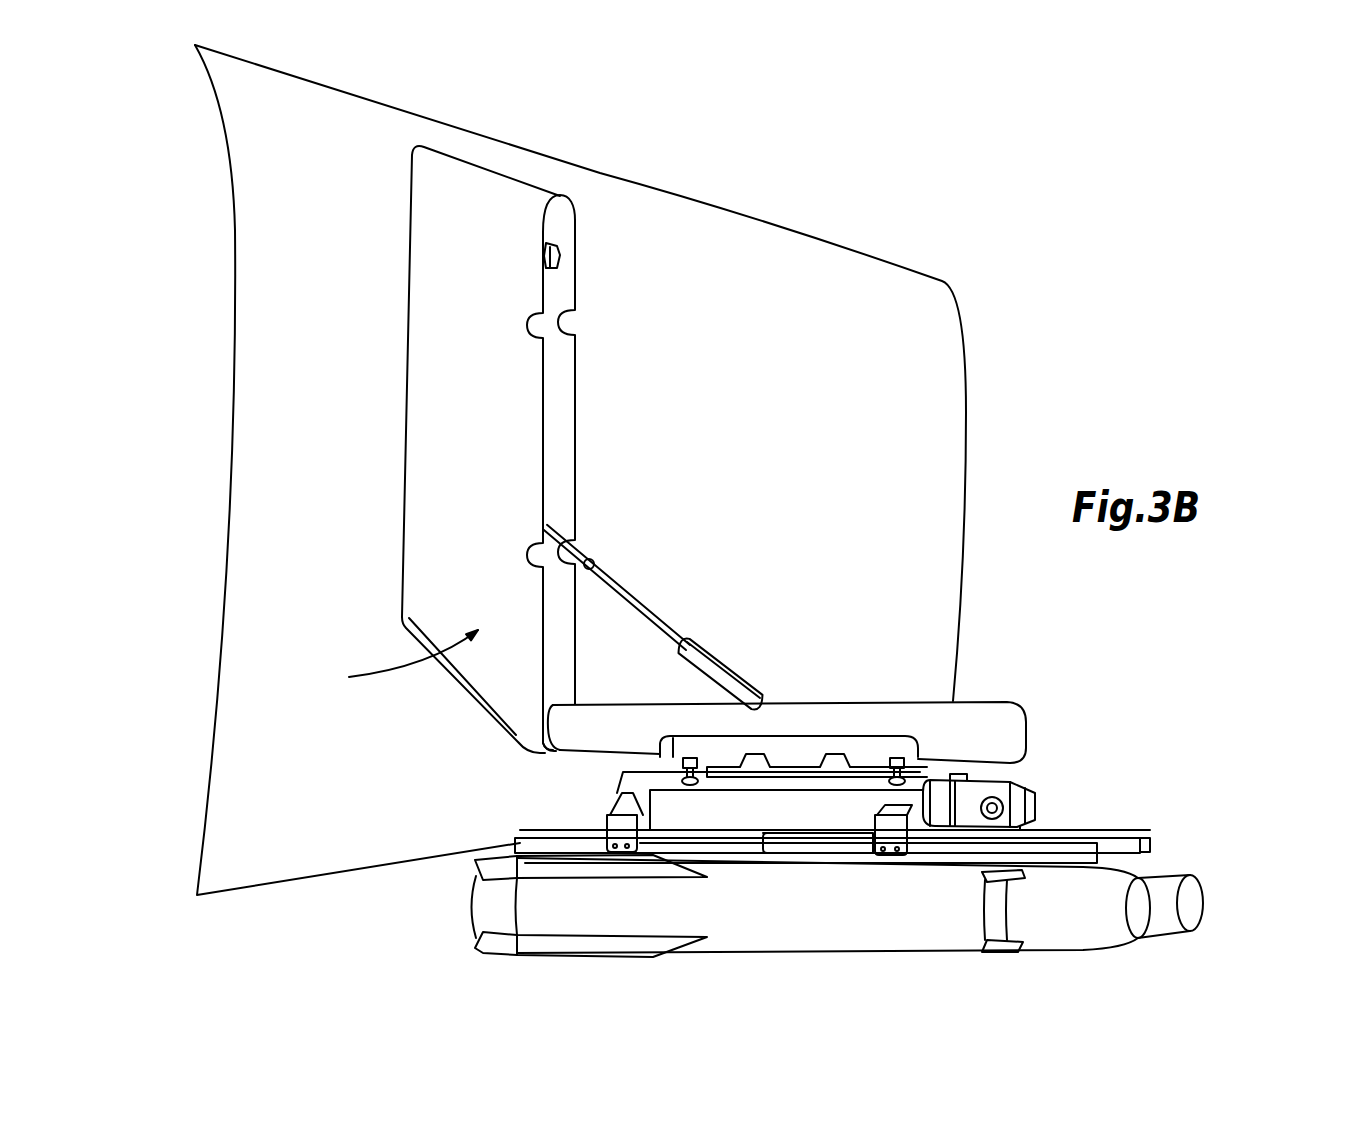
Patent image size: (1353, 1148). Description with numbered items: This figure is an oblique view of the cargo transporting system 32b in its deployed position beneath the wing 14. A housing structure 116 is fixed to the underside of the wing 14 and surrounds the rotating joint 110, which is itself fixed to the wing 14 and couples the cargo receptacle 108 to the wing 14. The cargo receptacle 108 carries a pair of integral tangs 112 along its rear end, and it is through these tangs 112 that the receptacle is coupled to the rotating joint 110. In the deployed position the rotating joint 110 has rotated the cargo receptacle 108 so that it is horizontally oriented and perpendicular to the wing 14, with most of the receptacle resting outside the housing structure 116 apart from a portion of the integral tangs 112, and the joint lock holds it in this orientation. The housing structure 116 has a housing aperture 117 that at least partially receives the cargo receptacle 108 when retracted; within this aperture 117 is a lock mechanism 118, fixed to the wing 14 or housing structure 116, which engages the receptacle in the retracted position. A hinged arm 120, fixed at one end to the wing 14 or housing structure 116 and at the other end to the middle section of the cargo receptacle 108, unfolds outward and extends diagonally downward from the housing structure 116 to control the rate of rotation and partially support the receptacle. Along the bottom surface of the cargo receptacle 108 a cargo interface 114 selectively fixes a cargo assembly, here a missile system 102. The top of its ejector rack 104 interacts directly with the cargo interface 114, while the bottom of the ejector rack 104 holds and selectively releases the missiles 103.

The wing 14 is at (252, 248).
The housing structure 116 is at (433, 523).
The housing aperture 117 is at (557, 443).
The lock mechanism 118 is at (560, 268).
The hinged arm 120 is at (647, 612).
The cargo transporting system 32b is at (393, 660).
The cargo receptacle 108 is at (813, 718).
The rotating joint 110 is at (542, 703).
The integral tangs 112 is at (583, 740).
The cargo interface 114 is at (860, 748).
The ejector rack 104 is at (1018, 787).
The missile system 102 is at (1165, 871).
The missiles 103 is at (1168, 928).